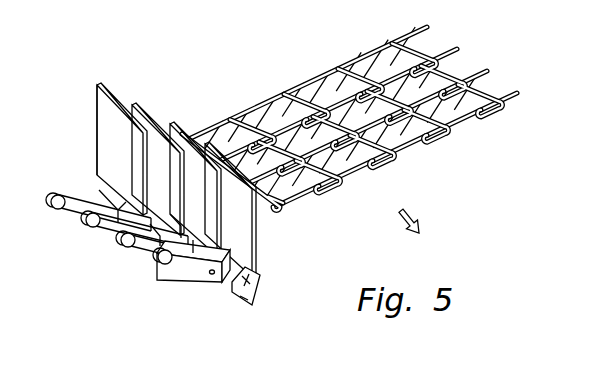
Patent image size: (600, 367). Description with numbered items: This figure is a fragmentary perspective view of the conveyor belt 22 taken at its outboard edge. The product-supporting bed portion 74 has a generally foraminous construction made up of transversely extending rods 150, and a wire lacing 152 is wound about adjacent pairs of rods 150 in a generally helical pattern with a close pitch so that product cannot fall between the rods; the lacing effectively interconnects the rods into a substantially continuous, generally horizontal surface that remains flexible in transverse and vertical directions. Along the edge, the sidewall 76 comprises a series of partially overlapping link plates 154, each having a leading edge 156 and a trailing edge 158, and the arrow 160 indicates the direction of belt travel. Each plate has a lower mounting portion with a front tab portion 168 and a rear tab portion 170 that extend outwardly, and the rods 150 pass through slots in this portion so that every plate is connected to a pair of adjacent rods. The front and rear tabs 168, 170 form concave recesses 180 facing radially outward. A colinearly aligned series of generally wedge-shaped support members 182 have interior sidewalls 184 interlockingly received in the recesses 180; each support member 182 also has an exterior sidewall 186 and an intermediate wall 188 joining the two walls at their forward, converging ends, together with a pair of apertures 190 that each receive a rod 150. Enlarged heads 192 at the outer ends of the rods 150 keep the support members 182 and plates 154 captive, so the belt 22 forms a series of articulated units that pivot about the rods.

The conveyor belt 22 is at (269, 66).
The product-supporting bed portion 74 is at (383, 111).
The sidewall 76 is at (88, 114).
The rods 150 is at (493, 73).
The wire lacing 152 is at (428, 38).
The link plates 154 is at (133, 105).
The leading edge 156 is at (147, 150).
The trailing edge 158 is at (95, 146).
The direction of belt travel 160 is at (420, 208).
The rear tab portion 170 is at (267, 230).
The front tab portion 168 is at (258, 283).
The concave recesses 180 is at (244, 303).
The support members 182 is at (192, 282).
The interior sidewall 184 is at (183, 238).
The exterior sidewall 186 is at (135, 247).
The intermediate wall 188 is at (193, 254).
The apertures 190 is at (212, 283).
The enlarged heads 192 is at (167, 262).